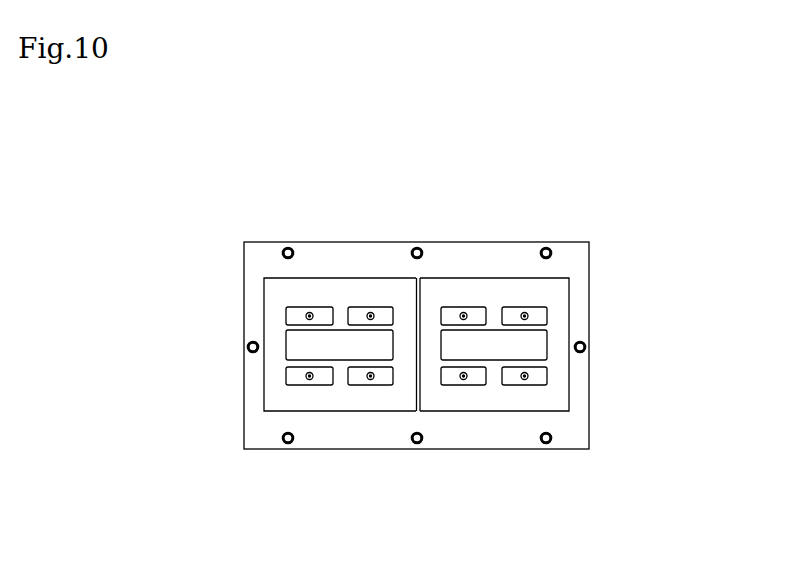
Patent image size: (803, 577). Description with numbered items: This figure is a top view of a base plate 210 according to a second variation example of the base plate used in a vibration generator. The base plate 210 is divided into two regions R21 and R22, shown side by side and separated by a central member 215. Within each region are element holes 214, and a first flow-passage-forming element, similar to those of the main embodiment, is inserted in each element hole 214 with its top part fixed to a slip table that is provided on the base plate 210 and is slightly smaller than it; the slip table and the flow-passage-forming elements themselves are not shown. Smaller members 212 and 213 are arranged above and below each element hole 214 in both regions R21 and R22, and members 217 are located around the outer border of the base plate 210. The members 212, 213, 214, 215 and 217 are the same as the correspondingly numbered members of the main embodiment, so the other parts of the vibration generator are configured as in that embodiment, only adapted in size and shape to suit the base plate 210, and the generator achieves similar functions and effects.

The base plate 210 is at (578, 236).
The member corresponding to reference numeral 17 217 is at (547, 249).
The region R21 is at (273, 293).
The region R22 is at (555, 295).
The member corresponding to reference numeral 15 215 is at (419, 408).
The element hole 214 is at (293, 340).
The member corresponding to reference numeral 12 212 is at (384, 379).
The member corresponding to reference numeral 13 213 is at (368, 378).